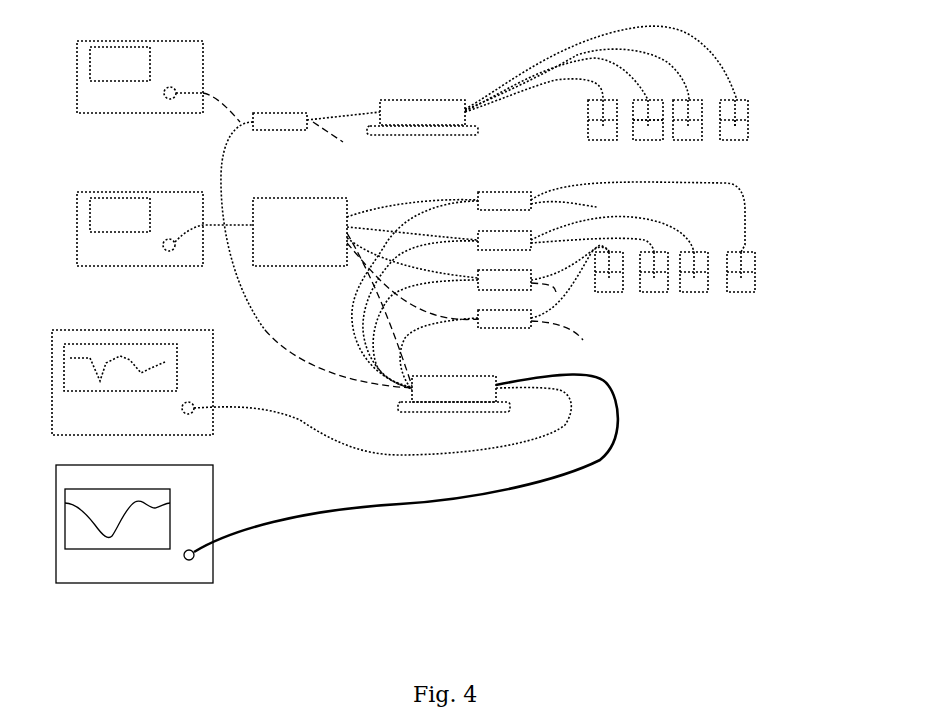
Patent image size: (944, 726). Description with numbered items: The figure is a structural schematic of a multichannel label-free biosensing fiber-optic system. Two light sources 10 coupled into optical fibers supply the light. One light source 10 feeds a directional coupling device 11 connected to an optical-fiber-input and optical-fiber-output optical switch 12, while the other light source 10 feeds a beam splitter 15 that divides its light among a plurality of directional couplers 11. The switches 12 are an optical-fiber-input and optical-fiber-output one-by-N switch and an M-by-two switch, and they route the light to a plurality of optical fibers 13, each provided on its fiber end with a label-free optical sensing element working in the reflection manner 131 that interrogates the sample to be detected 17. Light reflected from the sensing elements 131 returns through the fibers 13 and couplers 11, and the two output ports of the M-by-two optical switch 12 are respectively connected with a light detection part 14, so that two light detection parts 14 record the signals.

The light source 10 is at (181, 141).
The directional coupling device 11 is at (395, 235).
The optical-fiber-input and optical-fiber-output optical switch 12 is at (552, 219).
The optical fiber provided with label-free optical sensing element 13 is at (704, 160).
The label-free optical sensing element working in the reflection manner 131 is at (743, 128).
The light detection part 14 is at (335, 456).
The beam splitter 15 is at (300, 217).
The sample to be detected 17 is at (655, 130).